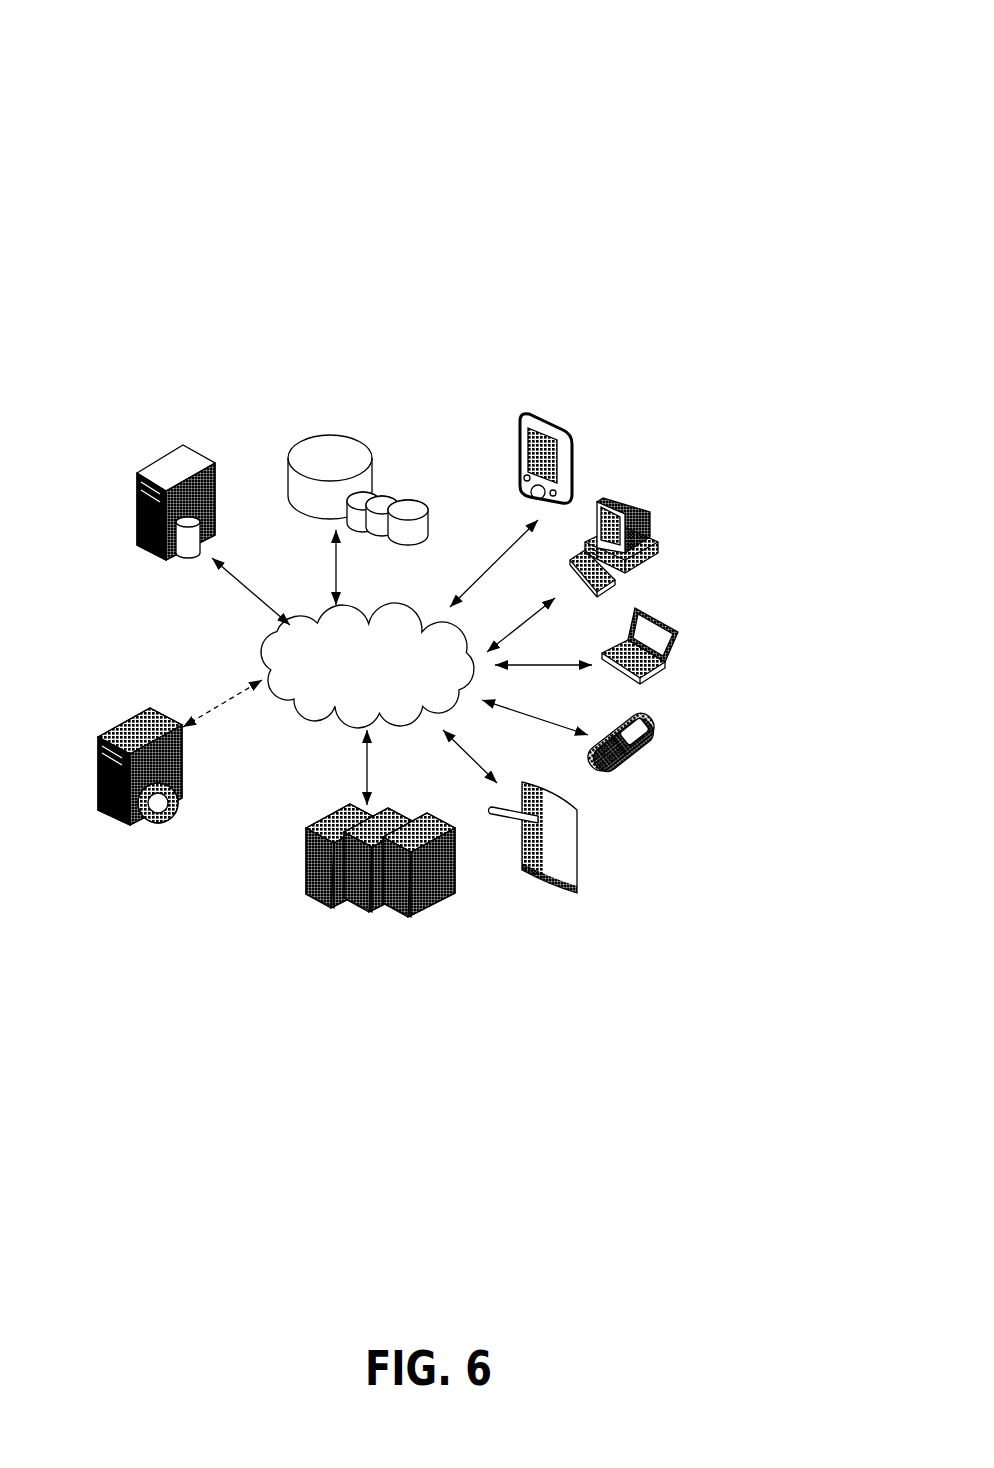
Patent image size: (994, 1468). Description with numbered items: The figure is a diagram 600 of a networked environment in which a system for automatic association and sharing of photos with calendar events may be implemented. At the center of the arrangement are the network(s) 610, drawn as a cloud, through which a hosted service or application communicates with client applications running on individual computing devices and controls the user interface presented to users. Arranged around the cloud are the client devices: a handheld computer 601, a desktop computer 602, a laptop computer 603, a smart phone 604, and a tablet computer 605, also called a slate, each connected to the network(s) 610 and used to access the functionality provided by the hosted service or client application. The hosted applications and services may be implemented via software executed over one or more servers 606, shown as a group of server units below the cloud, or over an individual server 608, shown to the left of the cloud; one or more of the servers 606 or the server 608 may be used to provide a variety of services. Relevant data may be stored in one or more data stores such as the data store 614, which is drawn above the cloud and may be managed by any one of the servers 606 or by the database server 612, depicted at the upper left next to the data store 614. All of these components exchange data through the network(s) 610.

The diagram 600 is at (705, 31).
The handheld computer 601 is at (576, 414).
The desktop computer 602 is at (661, 503).
The laptop computer 603 is at (677, 608).
The smart phone 604 is at (651, 719).
The tablet computer 605 is at (588, 824).
The servers 606 is at (336, 812).
The individual server 608 is at (122, 718).
The network(s) 610 is at (372, 600).
The database server 612 is at (187, 566).
The data store 614 is at (345, 415).